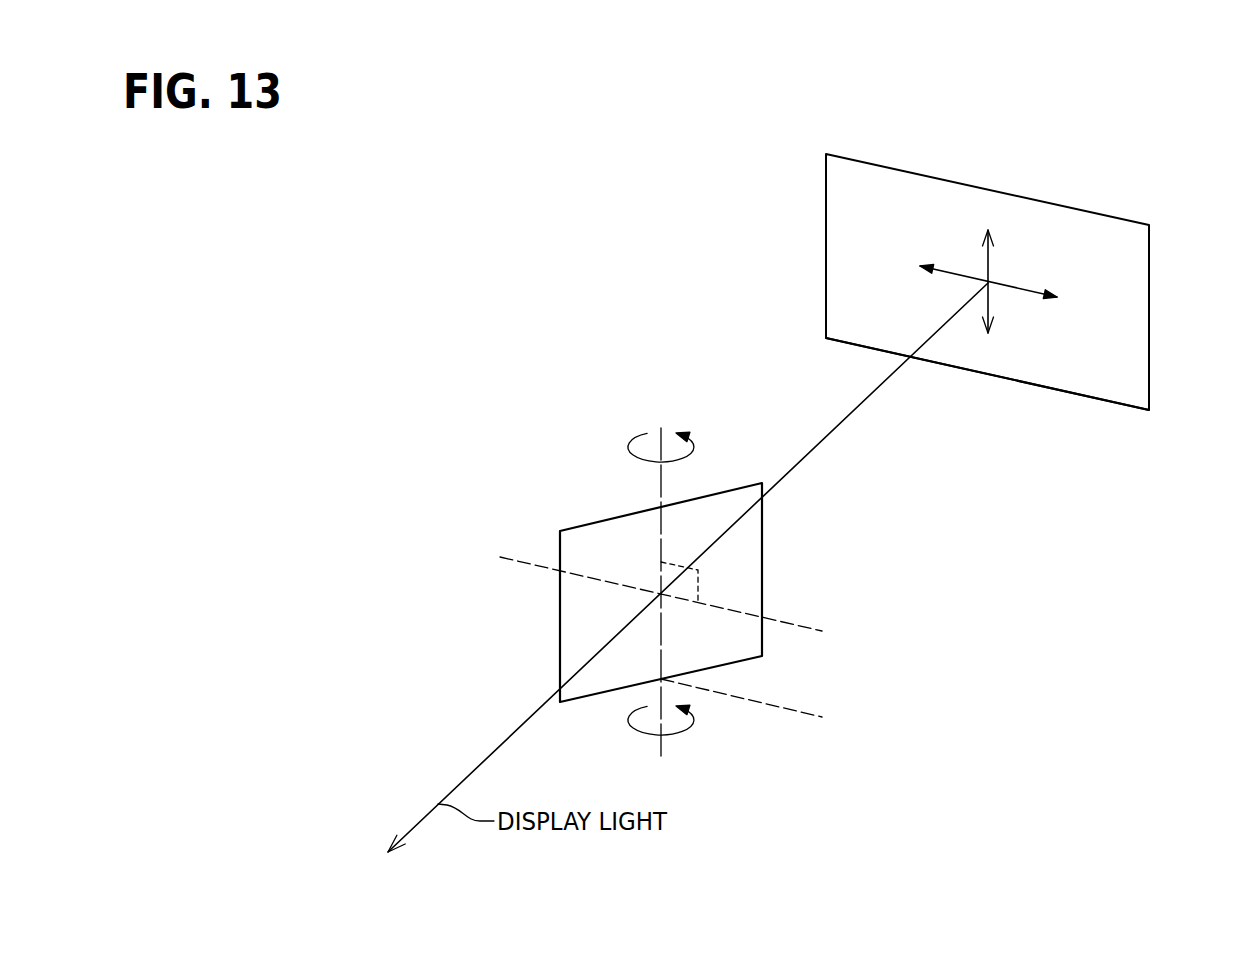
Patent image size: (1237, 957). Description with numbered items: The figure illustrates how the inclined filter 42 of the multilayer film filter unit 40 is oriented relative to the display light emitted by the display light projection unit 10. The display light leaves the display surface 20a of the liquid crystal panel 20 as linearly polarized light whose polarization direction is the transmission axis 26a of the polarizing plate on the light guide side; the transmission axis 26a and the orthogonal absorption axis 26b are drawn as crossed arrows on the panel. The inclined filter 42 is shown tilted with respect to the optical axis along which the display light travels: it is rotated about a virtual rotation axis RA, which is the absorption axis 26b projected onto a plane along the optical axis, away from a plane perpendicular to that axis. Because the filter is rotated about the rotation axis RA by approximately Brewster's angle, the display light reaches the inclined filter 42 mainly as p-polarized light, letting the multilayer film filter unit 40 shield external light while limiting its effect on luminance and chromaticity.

The display light projection unit 10 is at (987, 256).
The liquid crystal panel 20 is at (922, 173).
The display surface 20a is at (1095, 368).
The transmission axis 26a is at (1027, 288).
The absorption axis 26b is at (988, 258).
The multilayer film filter unit 40 is at (587, 592).
The inclined filter 42 is at (560, 596).
The rotation axis RA is at (652, 431).